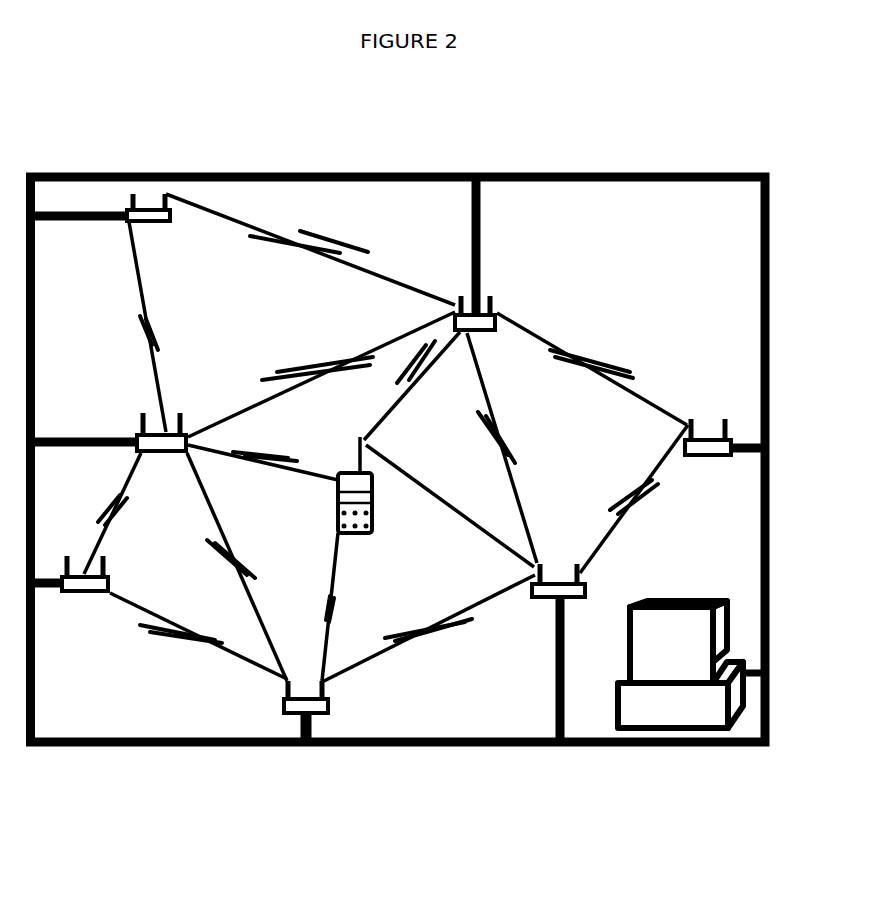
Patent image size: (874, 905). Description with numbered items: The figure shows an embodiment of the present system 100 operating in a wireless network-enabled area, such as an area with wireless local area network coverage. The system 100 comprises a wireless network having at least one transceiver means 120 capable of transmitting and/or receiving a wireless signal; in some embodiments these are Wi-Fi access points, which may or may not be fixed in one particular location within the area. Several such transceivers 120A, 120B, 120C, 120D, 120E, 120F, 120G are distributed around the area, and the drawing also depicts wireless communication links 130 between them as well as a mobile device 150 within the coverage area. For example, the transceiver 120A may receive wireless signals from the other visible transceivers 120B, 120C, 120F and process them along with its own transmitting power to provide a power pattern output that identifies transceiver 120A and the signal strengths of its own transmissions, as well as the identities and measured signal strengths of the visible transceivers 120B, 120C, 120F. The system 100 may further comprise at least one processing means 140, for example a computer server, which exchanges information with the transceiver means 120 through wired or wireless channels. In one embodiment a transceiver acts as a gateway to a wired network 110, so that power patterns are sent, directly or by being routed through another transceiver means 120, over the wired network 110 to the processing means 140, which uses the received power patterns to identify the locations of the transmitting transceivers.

The system 100 is at (355, 773).
The wired network 110 is at (411, 176).
The transceiver means 120 is at (513, 330).
The transceiver 120A is at (281, 706).
The transceiver 120B is at (560, 579).
The transceiver 120C is at (114, 577).
The transceiver 120D is at (713, 431).
The transceiver 120E is at (500, 324).
The transceiver 120F is at (131, 429).
The transceiver 120G is at (158, 228).
The wireless communication link 130 is at (429, 646).
The processing means 140 is at (669, 597).
The mobile device 150 is at (379, 507).